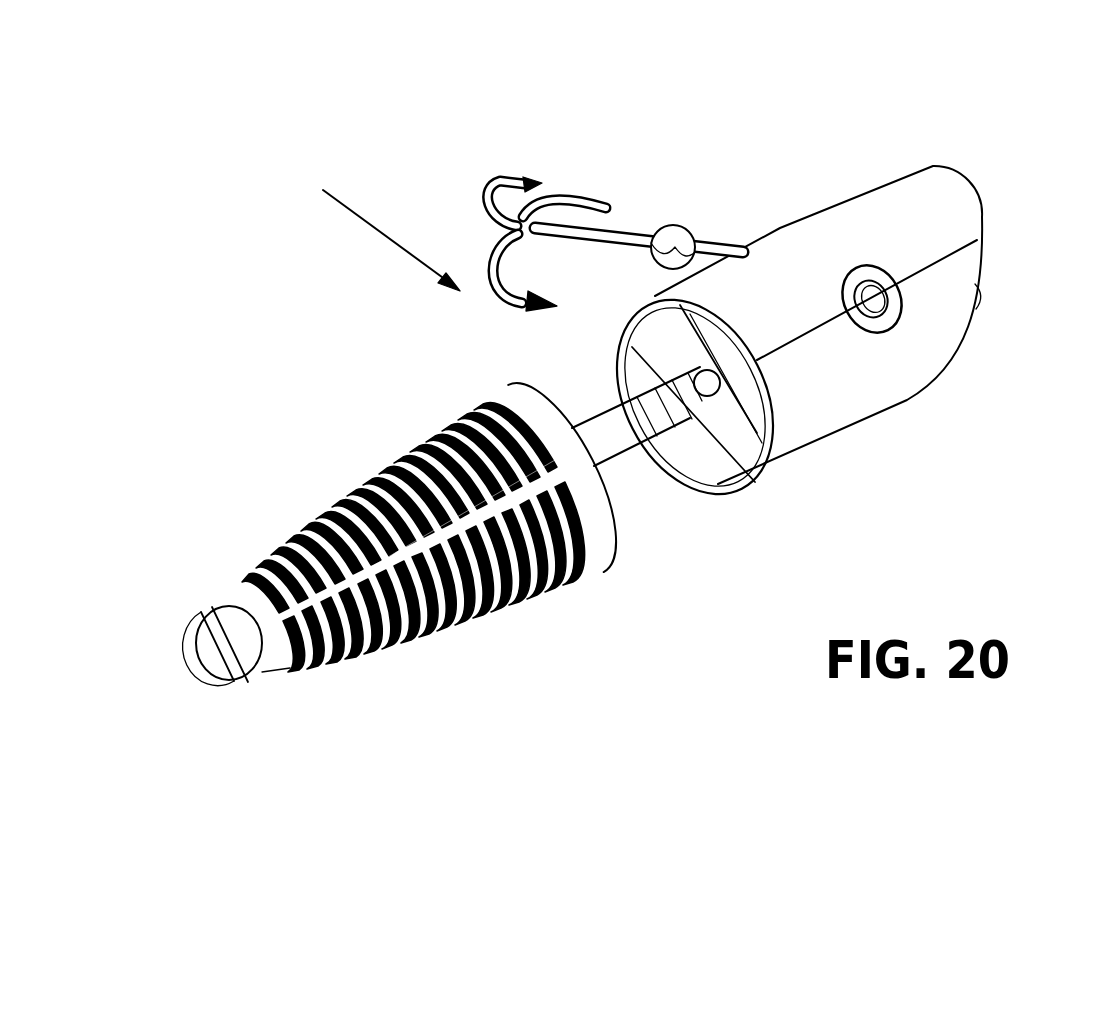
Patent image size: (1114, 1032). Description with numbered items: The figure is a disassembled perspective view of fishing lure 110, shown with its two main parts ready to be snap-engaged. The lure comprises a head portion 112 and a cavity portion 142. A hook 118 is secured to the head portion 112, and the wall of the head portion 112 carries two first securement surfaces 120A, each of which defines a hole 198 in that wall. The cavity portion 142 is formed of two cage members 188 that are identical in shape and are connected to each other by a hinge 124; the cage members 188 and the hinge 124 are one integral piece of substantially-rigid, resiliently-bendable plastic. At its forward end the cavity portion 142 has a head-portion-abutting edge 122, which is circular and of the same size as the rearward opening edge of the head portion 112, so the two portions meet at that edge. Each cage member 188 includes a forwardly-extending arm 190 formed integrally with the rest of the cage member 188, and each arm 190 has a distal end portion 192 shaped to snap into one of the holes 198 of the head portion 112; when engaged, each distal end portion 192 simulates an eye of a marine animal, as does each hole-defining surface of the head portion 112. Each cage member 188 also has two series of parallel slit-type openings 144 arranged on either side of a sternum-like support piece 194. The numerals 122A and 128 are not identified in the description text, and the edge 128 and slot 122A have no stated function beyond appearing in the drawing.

The fishing lure 110 is at (361, 228).
The head portion 112 is at (793, 282).
The hook 118 is at (557, 203).
The first securement surface 120A is at (886, 294).
The head-portion-abutting edge 122 is at (610, 502).
The collar slot 122A is at (757, 486).
The hinge 124 is at (213, 607).
The tip edge 128 is at (235, 597).
The cavity portion 142 is at (357, 480).
The slit-type openings 144 is at (583, 632).
The cage member 188 is at (213, 653).
The forwardly-extending arm 190 is at (613, 428).
The distal end portion 192 is at (698, 372).
The sternum-like support piece 194 is at (463, 507).
The hole 198 is at (877, 300).